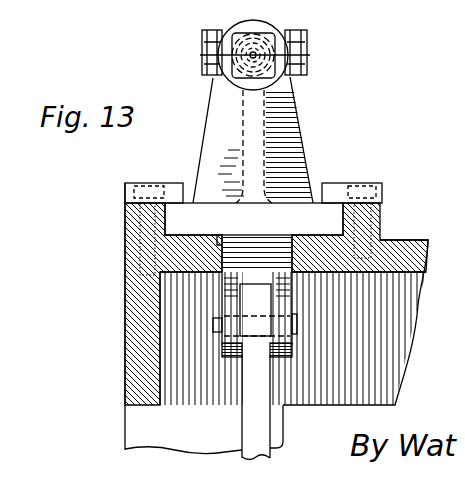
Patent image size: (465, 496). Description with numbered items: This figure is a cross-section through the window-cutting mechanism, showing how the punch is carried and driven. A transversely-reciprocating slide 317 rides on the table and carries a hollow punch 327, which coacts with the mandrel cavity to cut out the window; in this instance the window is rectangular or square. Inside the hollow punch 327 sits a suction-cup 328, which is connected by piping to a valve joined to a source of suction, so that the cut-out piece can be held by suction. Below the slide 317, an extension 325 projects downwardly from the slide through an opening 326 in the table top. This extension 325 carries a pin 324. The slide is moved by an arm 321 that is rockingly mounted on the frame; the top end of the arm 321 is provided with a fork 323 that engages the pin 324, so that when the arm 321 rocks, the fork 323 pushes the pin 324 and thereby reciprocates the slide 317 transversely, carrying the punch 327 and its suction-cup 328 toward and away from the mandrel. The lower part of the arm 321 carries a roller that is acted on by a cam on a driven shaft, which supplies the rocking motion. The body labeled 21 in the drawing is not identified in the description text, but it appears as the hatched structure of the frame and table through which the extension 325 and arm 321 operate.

The housing 21 is at (389, 256).
The transversely-reciprocating slide 317 is at (290, 212).
The arm 321 is at (252, 420).
The fork 323 is at (248, 284).
The pin 324 is at (214, 327).
The extension 325 is at (271, 260).
The opening 326 is at (207, 247).
The hollow punch 327 is at (289, 79).
The suction-cup 328 is at (255, 45).